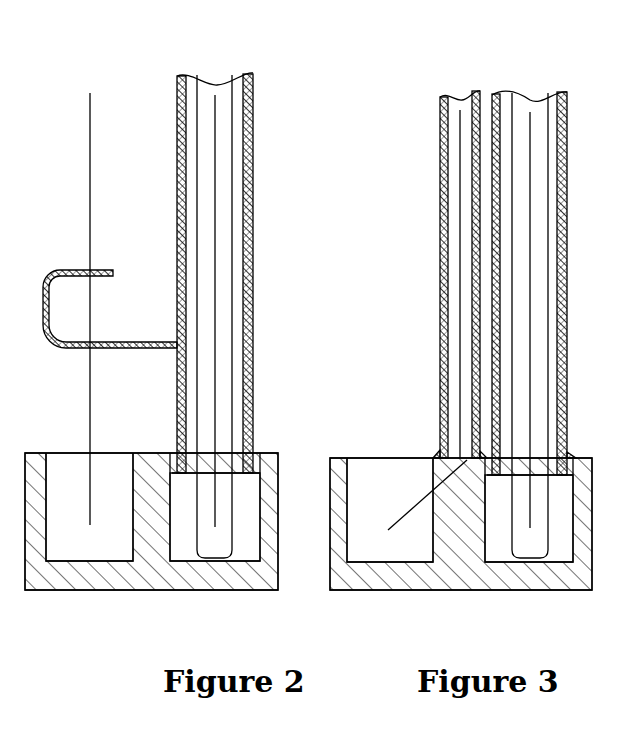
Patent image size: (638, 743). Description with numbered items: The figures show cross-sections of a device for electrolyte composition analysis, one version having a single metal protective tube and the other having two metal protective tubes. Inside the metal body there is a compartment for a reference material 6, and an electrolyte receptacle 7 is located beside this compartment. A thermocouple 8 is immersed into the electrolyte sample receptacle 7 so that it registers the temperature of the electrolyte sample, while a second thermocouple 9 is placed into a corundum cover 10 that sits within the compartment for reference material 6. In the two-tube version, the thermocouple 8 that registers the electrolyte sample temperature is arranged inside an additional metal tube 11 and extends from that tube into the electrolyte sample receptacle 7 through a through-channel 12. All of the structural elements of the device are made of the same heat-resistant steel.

In FIG. 2, the compartment for a reference material 6 is at (243, 505).
In FIG. 2, the electrolyte receptacle 7 is at (118, 483).
In FIG. 2, the thermocouple 8 is at (92, 232).
In FIG. 3, the thermocouple 8 is at (409, 505).
In FIG. 2, the thermocouple 9 is at (220, 397).
In FIG. 2, the corundum cover 10 is at (233, 313).
In FIG. 3, the metal tube 11 is at (440, 373).
In FIG. 3, the through-channel 12 is at (435, 457).